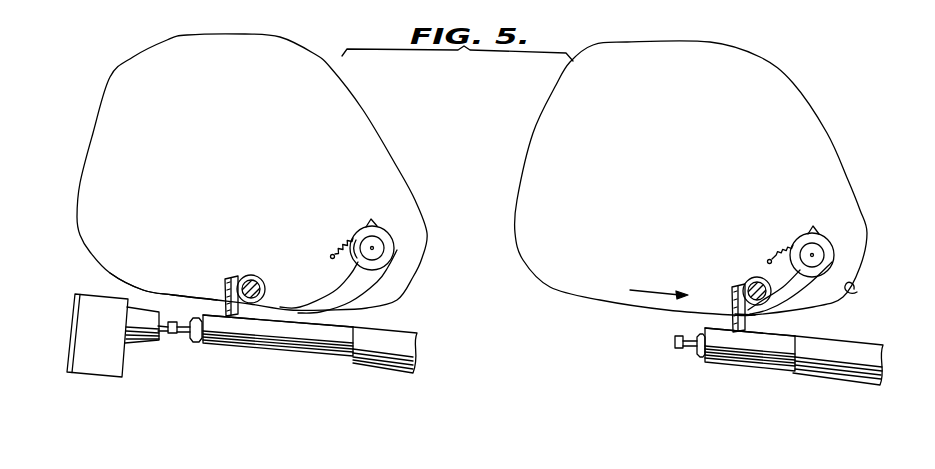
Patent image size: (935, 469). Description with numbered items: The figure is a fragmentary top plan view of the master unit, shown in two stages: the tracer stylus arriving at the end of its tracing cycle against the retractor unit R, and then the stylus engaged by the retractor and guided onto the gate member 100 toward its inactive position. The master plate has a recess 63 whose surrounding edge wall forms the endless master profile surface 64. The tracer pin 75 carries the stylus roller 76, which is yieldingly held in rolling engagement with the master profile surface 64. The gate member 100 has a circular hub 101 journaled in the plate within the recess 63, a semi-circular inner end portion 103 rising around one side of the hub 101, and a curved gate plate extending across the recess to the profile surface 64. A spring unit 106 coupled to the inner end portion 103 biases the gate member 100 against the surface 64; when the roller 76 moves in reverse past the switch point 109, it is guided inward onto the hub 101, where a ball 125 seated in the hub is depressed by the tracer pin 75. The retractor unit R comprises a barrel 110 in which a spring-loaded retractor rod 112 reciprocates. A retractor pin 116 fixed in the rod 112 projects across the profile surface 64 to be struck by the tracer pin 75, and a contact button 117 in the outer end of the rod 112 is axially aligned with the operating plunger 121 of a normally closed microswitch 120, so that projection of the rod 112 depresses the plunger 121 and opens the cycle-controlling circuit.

The master profile recess 63 is at (208, 55).
The master profile surface 64 is at (168, 293).
The tracer pin 75 is at (263, 289).
The stylus roller 76 is at (253, 276).
The gate member 100 is at (366, 291).
The hub 101 is at (356, 258).
The semi-circular inner end portion 103 is at (388, 235).
The spring unit 106 is at (334, 252).
The switch point 109 is at (752, 315).
The barrel 110 is at (383, 370).
The retractor rod 112 is at (243, 353).
The retractor pin 116 is at (230, 293).
The contact button 117 is at (181, 340).
The microswitch 120 is at (90, 326).
The operating plunger 121 is at (164, 334).
The ball 125 is at (373, 248).
The retractor unit R is at (305, 361).